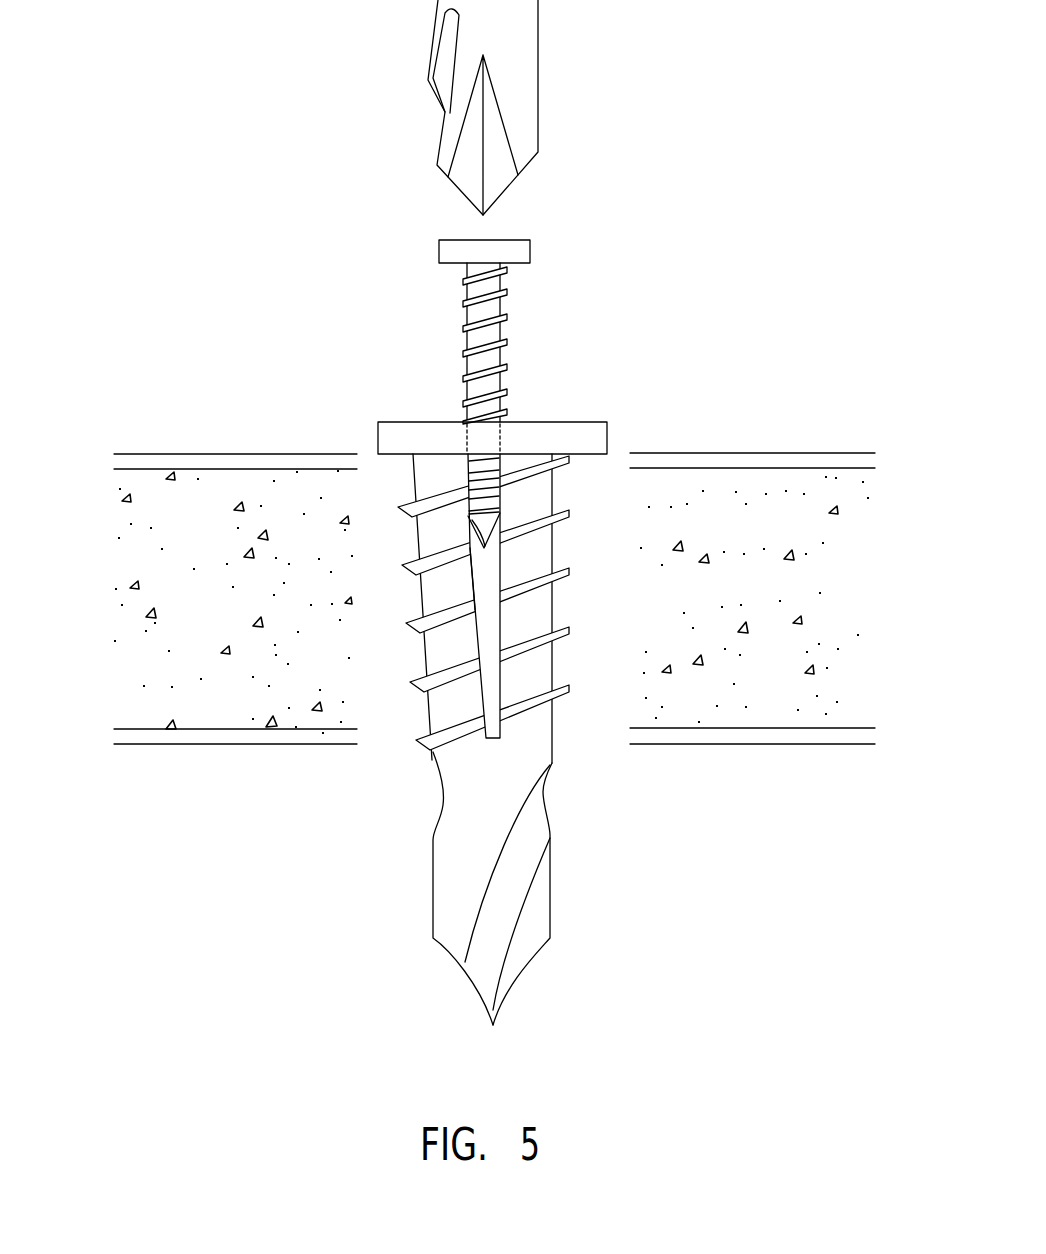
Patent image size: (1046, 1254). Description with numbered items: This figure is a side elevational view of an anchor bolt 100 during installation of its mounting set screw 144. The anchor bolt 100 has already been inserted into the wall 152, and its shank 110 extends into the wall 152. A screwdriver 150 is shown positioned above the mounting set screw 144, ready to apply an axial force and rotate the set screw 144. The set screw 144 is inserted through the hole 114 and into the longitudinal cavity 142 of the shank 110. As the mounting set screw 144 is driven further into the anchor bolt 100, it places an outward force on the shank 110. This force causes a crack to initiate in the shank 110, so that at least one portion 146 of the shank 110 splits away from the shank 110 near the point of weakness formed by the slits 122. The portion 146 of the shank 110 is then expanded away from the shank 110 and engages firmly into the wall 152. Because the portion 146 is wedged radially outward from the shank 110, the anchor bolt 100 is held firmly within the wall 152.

The anchor bolt 100 is at (360, 385).
The shank 110 is at (555, 541).
The hole 114 is at (500, 435).
The slits 122 is at (497, 668).
The longitudinal cavity 142 is at (482, 625).
The mounting set screw 144 is at (532, 252).
The portion of the shank 146 is at (415, 455).
The screwdriver 150 is at (541, 88).
The wall 152 is at (197, 727).